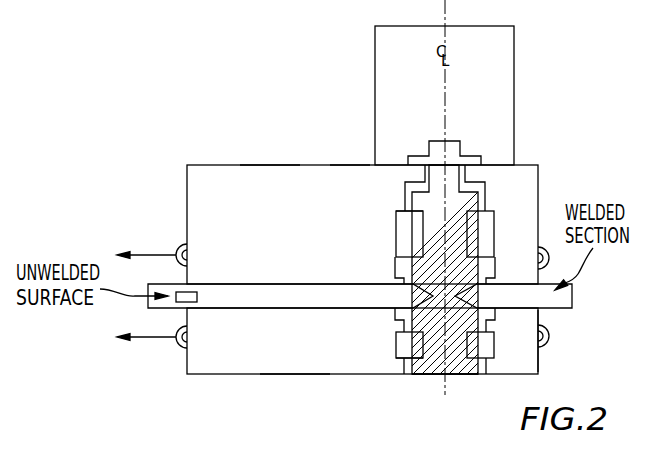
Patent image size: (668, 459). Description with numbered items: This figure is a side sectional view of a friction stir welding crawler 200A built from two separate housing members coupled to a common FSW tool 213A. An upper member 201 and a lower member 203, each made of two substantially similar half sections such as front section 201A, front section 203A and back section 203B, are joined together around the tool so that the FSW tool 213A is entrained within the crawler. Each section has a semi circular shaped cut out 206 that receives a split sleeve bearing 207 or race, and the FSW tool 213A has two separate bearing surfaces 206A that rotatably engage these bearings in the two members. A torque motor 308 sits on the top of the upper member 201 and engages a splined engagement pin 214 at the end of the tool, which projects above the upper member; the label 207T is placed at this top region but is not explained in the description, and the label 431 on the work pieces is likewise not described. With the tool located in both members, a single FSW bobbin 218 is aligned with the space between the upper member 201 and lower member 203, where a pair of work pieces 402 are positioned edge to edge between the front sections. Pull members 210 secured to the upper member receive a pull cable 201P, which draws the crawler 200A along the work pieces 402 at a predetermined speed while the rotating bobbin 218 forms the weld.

The crawler 200A is at (221, 86).
The upper member 201 is at (186, 136).
The front section 201A is at (262, 172).
The pull cable 201P is at (133, 240).
The lower member 203 is at (211, 389).
The front section 203A is at (300, 367).
The back section 203B is at (539, 352).
The semi circular shaped cut out 206 is at (397, 231).
The bearing surfaces 206A is at (397, 214).
The split sleeve bearing 207 is at (399, 211).
The insulator top 207T is at (346, 165).
The pull members 210 is at (178, 246).
The FSW tool 213A is at (452, 376).
The splined engagement pin 214 is at (454, 146).
The FSW bobbin 218 is at (418, 287).
The torque motor 308 is at (388, 62).
The work pieces 402 is at (290, 284).
The unwelded tube surfaces 431 is at (222, 283).